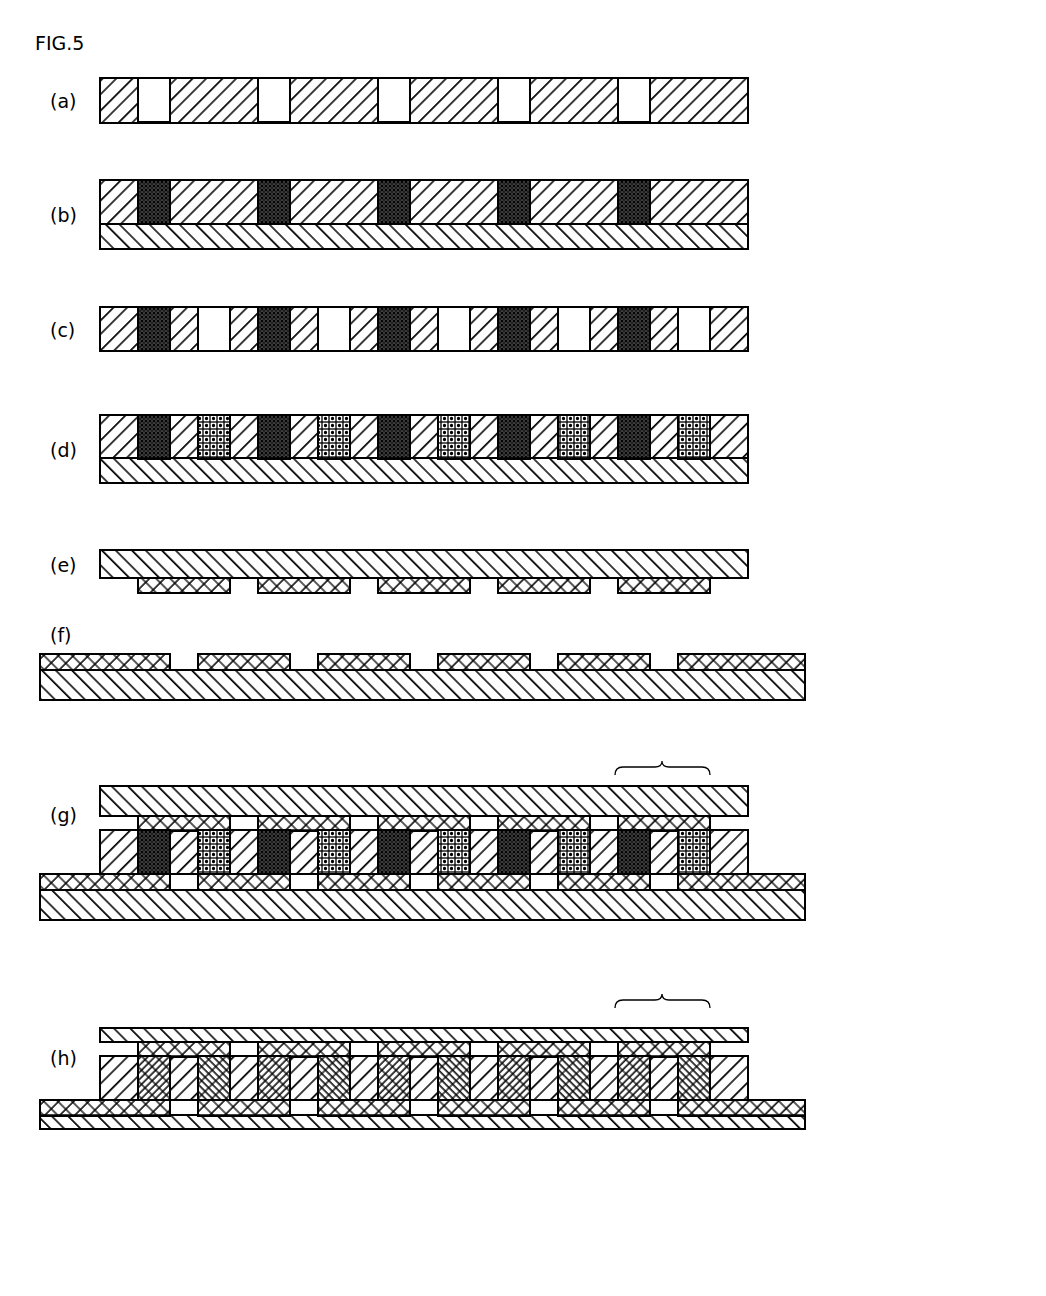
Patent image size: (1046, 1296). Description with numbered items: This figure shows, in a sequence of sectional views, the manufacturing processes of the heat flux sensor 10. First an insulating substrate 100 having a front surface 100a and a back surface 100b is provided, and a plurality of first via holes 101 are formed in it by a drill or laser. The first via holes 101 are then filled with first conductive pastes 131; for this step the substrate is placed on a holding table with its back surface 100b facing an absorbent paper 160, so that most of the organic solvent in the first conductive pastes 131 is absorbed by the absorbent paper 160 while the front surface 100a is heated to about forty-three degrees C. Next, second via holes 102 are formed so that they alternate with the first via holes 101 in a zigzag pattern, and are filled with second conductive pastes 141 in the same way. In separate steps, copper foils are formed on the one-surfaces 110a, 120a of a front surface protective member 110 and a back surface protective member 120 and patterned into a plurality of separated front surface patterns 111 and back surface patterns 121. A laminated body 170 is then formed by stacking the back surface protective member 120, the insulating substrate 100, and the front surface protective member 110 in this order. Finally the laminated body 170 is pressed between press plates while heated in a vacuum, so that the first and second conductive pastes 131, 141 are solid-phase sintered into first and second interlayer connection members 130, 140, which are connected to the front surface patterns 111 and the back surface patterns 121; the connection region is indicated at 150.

The heat flux sensor 10 is at (337, 1013).
The insulating substrate 100 is at (732, 104).
The front surface 100a is at (112, 78).
The back surface 100b is at (112, 123).
The first via holes 101 is at (647, 100).
The second via holes 102 is at (698, 345).
The front surface protective member 110 is at (735, 562).
The one-surface of the front surface protective member 110a is at (120, 580).
The front surface patterns 111 is at (636, 600).
The back surface protective member 120 is at (775, 688).
The one-surface of the back surface protective member 120a is at (112, 668).
The back surface patterns 121 is at (520, 672).
The first interlayer connection members 130 is at (636, 1090).
The first conductive pastes 131 is at (628, 230).
The second interlayer connection members 140 is at (692, 1090).
The second conductive pastes 141 is at (690, 442).
The connection portion 150 is at (662, 872).
The absorbent paper 160 is at (735, 238).
The laminated body 170 is at (356, 777).